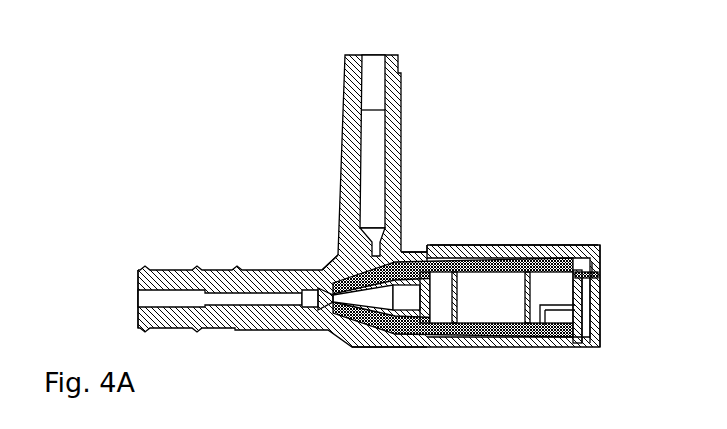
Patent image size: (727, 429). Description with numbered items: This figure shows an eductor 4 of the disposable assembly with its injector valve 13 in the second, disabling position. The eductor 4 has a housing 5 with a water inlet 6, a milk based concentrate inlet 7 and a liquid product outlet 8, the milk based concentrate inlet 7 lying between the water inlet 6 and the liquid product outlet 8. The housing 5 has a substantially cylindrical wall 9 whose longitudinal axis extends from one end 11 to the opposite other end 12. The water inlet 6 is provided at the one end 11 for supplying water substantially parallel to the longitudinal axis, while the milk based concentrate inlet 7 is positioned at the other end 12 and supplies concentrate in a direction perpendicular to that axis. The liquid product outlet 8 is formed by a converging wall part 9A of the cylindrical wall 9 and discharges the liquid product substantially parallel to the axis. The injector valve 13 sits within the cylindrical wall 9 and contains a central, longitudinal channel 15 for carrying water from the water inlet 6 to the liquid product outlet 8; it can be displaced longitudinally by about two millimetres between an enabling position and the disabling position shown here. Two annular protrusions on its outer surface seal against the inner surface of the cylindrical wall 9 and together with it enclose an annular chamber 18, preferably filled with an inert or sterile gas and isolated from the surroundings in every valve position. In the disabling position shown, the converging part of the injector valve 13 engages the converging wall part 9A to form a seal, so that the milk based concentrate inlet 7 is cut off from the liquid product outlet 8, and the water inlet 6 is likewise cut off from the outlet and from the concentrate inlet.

The eductor 4 is at (489, 231).
The housing 5 is at (529, 351).
The water inlet 6 is at (590, 297).
The milk based concentrate inlet 7 is at (346, 184).
The liquid product outlet 8 is at (315, 300).
The cylindrical wall 9 is at (418, 325).
The converging wall part 9A is at (318, 270).
The one end of the cylindrical wall 11 is at (570, 246).
The other end of the cylindrical wall 12 is at (358, 330).
The injector valve 13 is at (497, 337).
The central longitudinal channel 15 is at (468, 298).
The annular chamber 18 is at (408, 252).